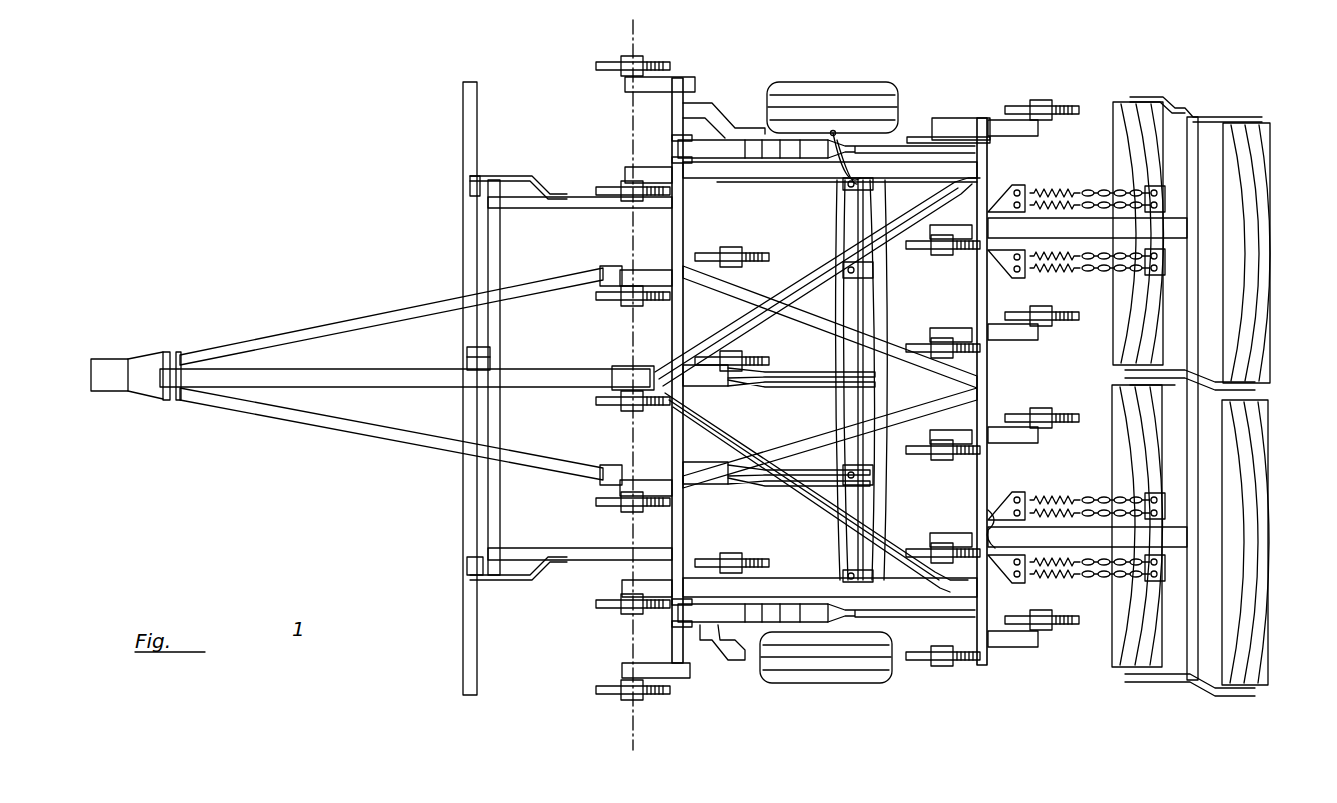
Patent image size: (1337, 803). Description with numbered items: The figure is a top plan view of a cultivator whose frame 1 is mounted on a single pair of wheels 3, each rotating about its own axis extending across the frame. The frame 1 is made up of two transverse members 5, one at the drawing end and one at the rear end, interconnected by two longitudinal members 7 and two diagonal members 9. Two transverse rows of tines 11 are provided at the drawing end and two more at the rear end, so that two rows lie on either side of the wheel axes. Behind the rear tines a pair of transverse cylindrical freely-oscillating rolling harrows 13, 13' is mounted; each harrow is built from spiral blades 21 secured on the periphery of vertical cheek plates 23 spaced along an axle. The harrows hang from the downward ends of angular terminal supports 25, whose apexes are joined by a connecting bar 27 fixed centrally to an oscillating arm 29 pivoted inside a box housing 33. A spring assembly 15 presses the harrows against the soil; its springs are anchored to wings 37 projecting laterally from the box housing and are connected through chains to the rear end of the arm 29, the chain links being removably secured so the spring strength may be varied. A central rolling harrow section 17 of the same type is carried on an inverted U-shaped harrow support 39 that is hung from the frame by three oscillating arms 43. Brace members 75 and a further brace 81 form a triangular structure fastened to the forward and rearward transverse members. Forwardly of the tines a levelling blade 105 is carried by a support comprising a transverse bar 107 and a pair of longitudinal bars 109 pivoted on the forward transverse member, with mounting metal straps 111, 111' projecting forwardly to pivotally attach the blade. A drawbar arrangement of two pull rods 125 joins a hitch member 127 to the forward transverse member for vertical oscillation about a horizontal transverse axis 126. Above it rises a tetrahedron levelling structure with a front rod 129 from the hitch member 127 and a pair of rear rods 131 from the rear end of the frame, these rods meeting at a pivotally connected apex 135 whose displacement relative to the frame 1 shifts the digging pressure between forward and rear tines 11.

The frame 1 is at (826, 377).
The wheels 3 is at (890, 96).
The transverse member 5 is at (683, 297).
The longitudinal member 7 is at (870, 357).
The diagonal member 9 is at (922, 350).
The tines 11 is at (742, 358).
The harrow 13 is at (1193, 541).
The harrow 13' is at (1197, 242).
The spring assembly 15 is at (1086, 497).
The harrow section 17 is at (888, 272).
The spiral blades 21 is at (1265, 622).
The cheek plates 23 is at (1124, 380).
The angular terminal support 25 is at (1170, 700).
The connecting bar 27 is at (1200, 532).
The arm 29 is at (1050, 496).
The box housing 33 is at (1005, 510).
The wings 37 is at (985, 520).
The harrow support 39 is at (843, 410).
The arms 43 is at (795, 384).
The brace members 75 is at (742, 648).
The brace 81 is at (880, 615).
The blade 105 is at (478, 692).
The transverse bar 107 is at (500, 512).
The longitudinal bars 109 is at (530, 209).
The mounting metal strap 111 is at (517, 399).
The mounting metal strap 111' is at (436, 546).
The pull rods 125 is at (250, 338).
The horizontal transverse axis 126 is at (633, 240).
The hitch member 127 is at (140, 390).
The front rod 129 is at (372, 380).
The rear rods 131 is at (800, 280).
The apex 135 is at (636, 370).